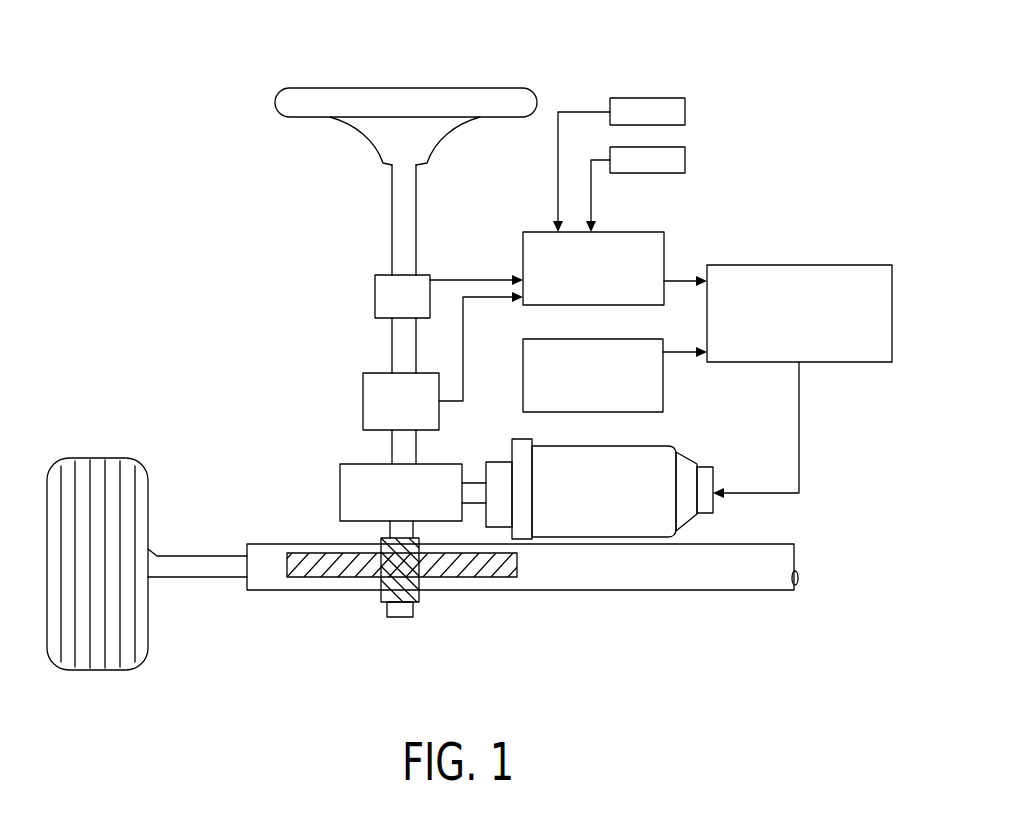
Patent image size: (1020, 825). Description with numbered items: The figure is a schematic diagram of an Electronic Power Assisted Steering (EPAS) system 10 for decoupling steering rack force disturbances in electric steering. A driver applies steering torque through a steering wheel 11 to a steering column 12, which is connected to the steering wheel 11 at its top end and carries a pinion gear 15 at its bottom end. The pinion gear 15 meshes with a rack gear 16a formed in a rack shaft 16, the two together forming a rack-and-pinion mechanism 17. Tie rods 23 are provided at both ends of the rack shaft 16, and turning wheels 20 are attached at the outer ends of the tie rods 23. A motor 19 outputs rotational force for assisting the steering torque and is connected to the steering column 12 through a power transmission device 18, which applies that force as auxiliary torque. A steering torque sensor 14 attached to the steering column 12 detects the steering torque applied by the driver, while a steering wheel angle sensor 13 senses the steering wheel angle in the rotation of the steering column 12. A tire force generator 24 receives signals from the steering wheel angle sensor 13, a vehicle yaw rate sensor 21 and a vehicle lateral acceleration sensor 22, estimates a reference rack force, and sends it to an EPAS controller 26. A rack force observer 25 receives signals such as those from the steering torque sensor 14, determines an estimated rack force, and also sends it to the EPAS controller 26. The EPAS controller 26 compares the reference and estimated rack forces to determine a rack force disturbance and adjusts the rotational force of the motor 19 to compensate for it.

The Electronic Power Assisted Steering (EPAS) system 10 is at (306, 61).
The steering wheel 11 is at (405, 87).
The steering column 12 is at (392, 223).
The steering wheel angle sensor 13 is at (375, 297).
The steering torque sensor 14 is at (363, 392).
The pinion gear 15 is at (409, 587).
The rack shaft 16 is at (683, 577).
The rack gear 16a is at (317, 567).
The rack-and-pinion mechanism 17 is at (372, 636).
The power transmission device 18 is at (340, 492).
The motor 19 is at (583, 518).
The turning wheels 20 is at (100, 457).
The vehicle yaw rate sensor 21 is at (685, 112).
The vehicle lateral acceleration sensor 22 is at (685, 163).
The tie rods 23 is at (197, 578).
The tire force generator 24 is at (523, 252).
The rack force observer 25 is at (663, 385).
The EPAS controller 26 is at (892, 310).